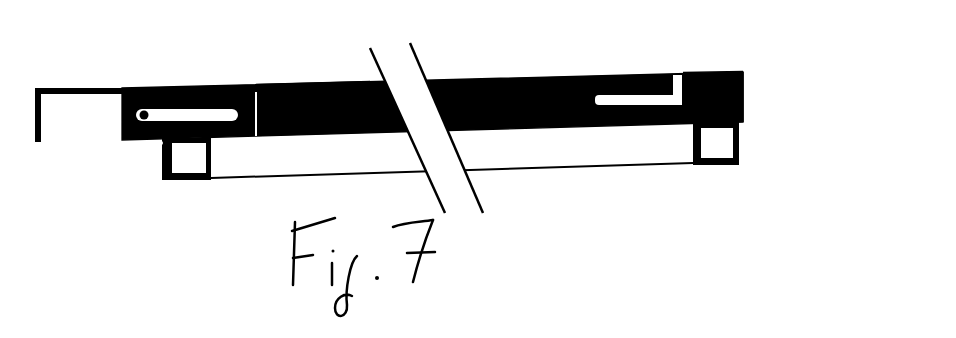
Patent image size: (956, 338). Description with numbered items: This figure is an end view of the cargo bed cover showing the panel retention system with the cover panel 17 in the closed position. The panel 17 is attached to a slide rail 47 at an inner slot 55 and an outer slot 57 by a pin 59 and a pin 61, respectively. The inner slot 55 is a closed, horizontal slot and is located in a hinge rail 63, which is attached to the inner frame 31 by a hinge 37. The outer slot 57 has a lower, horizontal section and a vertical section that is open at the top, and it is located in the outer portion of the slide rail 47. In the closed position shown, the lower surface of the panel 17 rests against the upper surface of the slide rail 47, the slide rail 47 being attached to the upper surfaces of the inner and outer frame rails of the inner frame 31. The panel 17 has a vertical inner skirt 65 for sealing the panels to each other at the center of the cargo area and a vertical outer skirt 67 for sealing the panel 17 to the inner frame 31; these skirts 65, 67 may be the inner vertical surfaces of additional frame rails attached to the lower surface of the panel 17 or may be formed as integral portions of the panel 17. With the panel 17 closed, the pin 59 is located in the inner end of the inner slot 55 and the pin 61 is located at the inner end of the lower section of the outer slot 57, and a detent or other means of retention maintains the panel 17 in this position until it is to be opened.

The cover panel 17 is at (598, 73).
The inner frame 31 is at (742, 149).
The hinge 37 is at (160, 150).
The slide rail 47 is at (743, 77).
The inner slot 55 is at (192, 88).
The outer slot 57 is at (700, 73).
The pin 59 is at (140, 89).
The pin 61 is at (570, 80).
The hinge rail 63 is at (244, 84).
The inner skirt 65 is at (43, 121).
The outer skirt 67 is at (743, 100).